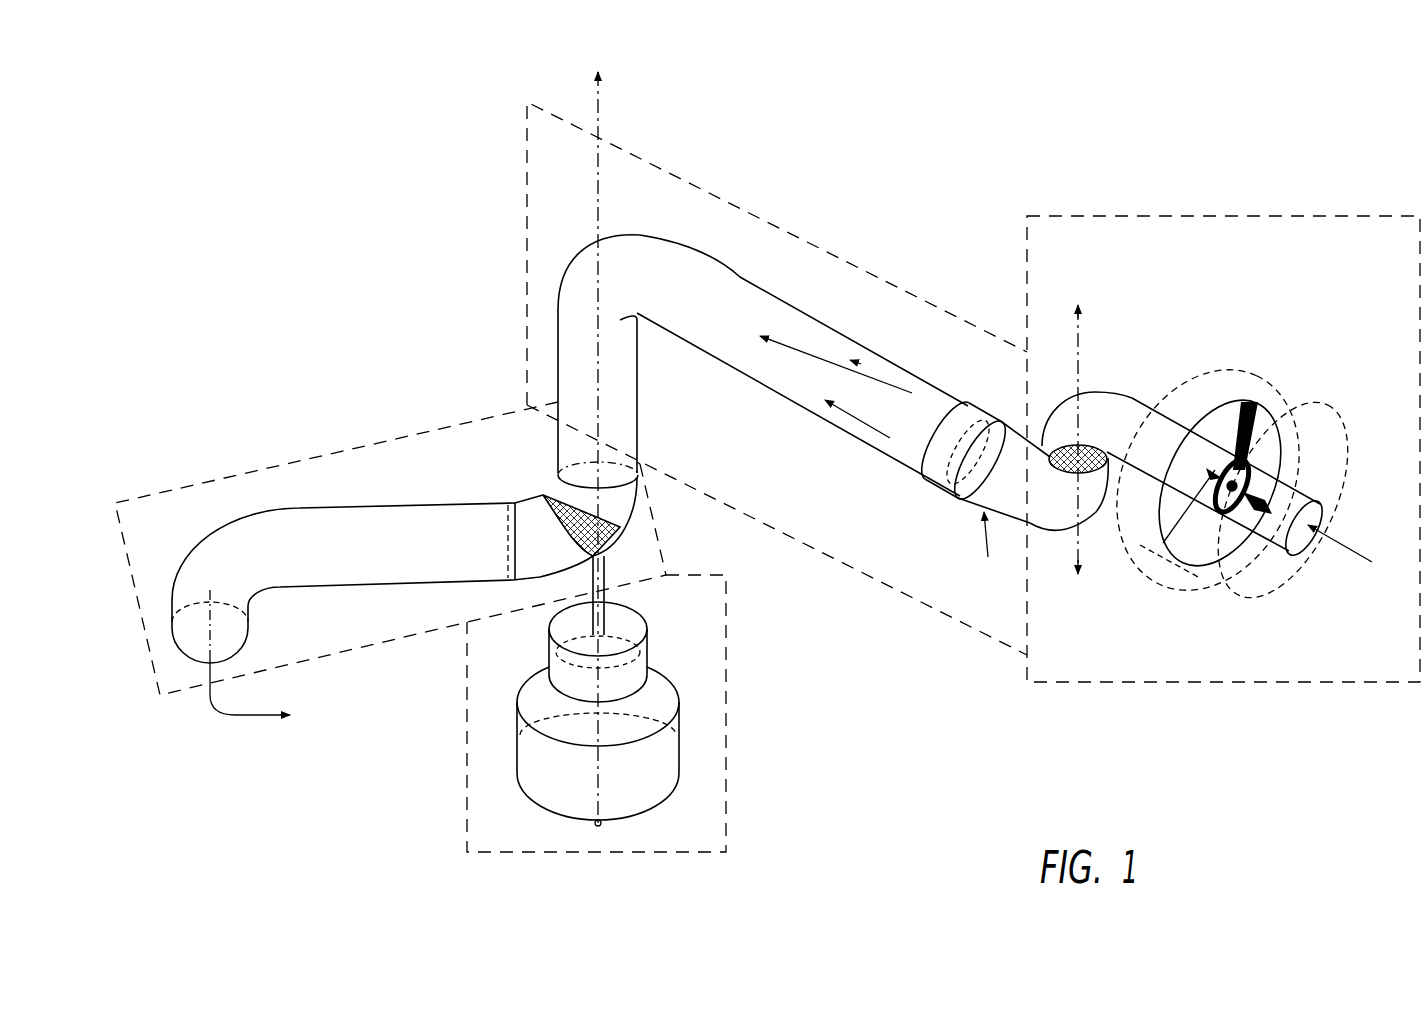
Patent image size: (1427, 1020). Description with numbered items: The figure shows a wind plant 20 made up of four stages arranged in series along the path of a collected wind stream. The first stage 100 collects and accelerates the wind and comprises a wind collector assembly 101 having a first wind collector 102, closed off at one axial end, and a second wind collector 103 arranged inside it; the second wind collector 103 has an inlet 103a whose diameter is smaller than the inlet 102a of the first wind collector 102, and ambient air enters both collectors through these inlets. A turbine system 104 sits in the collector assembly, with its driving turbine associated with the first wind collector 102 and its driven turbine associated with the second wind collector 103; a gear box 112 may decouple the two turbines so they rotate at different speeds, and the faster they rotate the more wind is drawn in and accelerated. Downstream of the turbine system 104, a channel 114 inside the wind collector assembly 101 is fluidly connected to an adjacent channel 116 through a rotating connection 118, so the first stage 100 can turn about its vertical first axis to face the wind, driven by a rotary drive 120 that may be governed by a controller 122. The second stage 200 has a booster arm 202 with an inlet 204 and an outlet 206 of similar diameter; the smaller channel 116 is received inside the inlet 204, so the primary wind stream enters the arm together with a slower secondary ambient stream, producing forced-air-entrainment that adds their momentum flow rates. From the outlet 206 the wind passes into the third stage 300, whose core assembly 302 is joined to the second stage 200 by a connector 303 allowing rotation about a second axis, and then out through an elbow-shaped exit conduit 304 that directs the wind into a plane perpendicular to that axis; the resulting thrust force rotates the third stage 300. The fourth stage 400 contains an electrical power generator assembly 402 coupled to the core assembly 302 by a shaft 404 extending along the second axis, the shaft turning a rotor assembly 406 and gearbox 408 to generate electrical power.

The wind plant 20 is at (286, 211).
The first stage 100 is at (1098, 688).
The wind collector assembly 101 is at (1263, 349).
The first wind collector 102 is at (1282, 392).
The inlet of the first wind collector 102a is at (1362, 461).
The second wind collector 103 is at (1257, 550).
The inlet of the second wind collector 103a is at (1314, 558).
The turbine system 104 is at (1198, 567).
The gear box 112 is at (1222, 455).
The channel 114 is at (1130, 407).
The channel 116 is at (1048, 506).
The rotating connection/joint 118 is at (1102, 408).
The rotary drive 120 is at (1097, 478).
The controller 122 is at (1046, 446).
The second stage 200 is at (912, 618).
The booster arm 202 is at (853, 437).
The inlet of the booster arm 204 is at (1018, 424).
The outlet of the booster arm 206 is at (660, 454).
The third stage 300 is at (163, 497).
The core assembly 302 is at (511, 481).
The connector 303 is at (543, 492).
The exit conduit 304 is at (340, 507).
The fourth stage 400 is at (460, 827).
The electrical power generator assembly 402 is at (482, 745).
The shaft 404 is at (606, 594).
The rotor assembly 406 is at (650, 770).
The gearbox 408 is at (648, 650).